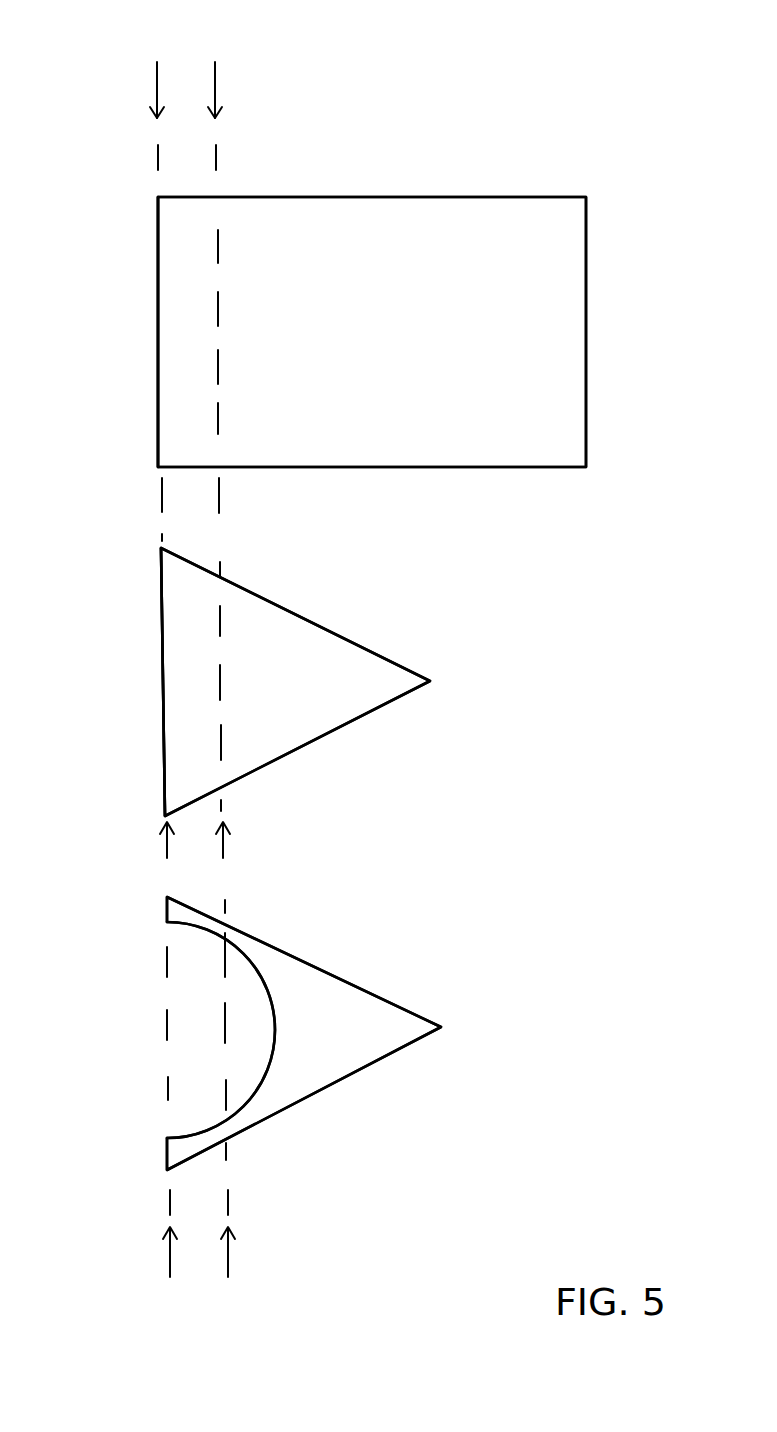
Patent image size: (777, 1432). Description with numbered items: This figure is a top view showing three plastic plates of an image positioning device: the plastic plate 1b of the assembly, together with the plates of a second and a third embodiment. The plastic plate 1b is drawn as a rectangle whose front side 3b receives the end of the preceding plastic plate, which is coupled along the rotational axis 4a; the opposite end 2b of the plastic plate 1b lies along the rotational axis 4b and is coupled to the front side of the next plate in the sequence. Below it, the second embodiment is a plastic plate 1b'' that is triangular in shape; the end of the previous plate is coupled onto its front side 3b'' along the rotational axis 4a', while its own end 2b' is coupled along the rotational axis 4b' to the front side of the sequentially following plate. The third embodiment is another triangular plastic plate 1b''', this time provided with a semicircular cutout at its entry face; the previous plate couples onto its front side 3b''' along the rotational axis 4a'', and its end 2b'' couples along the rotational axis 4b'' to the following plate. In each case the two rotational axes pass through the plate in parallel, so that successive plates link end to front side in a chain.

The plastic plate 1b is at (423, 332).
The end of the plastic plate 2b is at (101, 332).
The front side of the plastic plate 3b is at (372, 294).
The rotational axis 4a is at (217, 407).
The rotational axis 4b is at (160, 272).
The plastic plate 1b'' is at (325, 682).
The end of the plastic plate 2b' is at (109, 682).
The front side of the plastic plate 3b'' is at (295, 682).
The rotational axis 4a' is at (232, 863).
The rotational axis 4b' is at (170, 863).
The plastic plate 1b''' is at (331, 1033).
The end of the plastic plate 2b'' is at (162, 1033).
The front side of the plastic plate 3b''' is at (304, 1033).
The rotational axis 4a'' is at (237, 1113).
The rotational axis 4b'' is at (177, 1137).